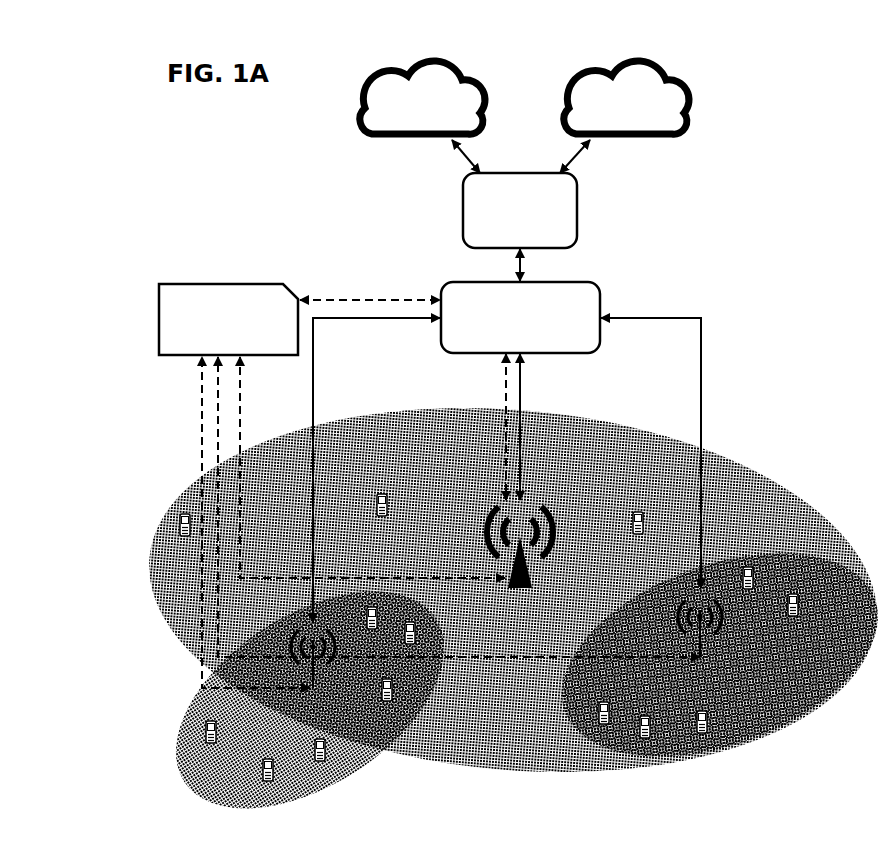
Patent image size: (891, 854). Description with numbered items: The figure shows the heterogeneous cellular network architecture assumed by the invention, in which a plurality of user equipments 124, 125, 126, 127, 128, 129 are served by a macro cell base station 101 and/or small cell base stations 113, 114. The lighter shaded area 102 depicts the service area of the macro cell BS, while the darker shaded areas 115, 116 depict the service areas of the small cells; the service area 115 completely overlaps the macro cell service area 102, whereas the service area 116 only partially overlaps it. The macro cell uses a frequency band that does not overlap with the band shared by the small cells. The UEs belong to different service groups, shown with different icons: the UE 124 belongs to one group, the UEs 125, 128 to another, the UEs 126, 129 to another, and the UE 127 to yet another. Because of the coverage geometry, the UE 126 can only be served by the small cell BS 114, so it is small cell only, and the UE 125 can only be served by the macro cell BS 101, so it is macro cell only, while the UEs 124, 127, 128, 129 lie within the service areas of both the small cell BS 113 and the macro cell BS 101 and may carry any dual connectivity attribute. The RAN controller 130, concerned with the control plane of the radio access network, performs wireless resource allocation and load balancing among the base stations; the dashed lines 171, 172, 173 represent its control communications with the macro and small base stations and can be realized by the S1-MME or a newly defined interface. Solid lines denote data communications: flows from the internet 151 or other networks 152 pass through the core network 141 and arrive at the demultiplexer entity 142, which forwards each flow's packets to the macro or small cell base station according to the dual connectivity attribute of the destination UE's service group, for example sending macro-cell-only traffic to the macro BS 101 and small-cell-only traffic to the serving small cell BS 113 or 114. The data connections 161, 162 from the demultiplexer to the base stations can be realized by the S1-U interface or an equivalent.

The macro cell base station 101 is at (525, 565).
The service area of the macro cell 102 is at (775, 748).
The small cell base station 113 is at (722, 632).
The small cell base station 114 is at (290, 636).
The service area of the small cell 115 is at (807, 657).
The service area of the small cell 116 is at (415, 700).
The user equipment 124 is at (705, 738).
The user equipment 125 is at (184, 512).
The user equipment 126 is at (205, 729).
The user equipment 127 is at (648, 740).
The user equipment 128 is at (805, 615).
The user equipment 129 is at (760, 573).
The RAN controller 130 is at (192, 357).
The core network 141 is at (577, 212).
The demultiplexer entity 142 is at (600, 300).
The internet 151 is at (357, 121).
The other networks 152 is at (690, 108).
The data connection 161 is at (520, 385).
The data connection 162 is at (701, 385).
The control connection 171 is at (382, 580).
The control connection 172 is at (483, 658).
The control connection 173 is at (216, 660).